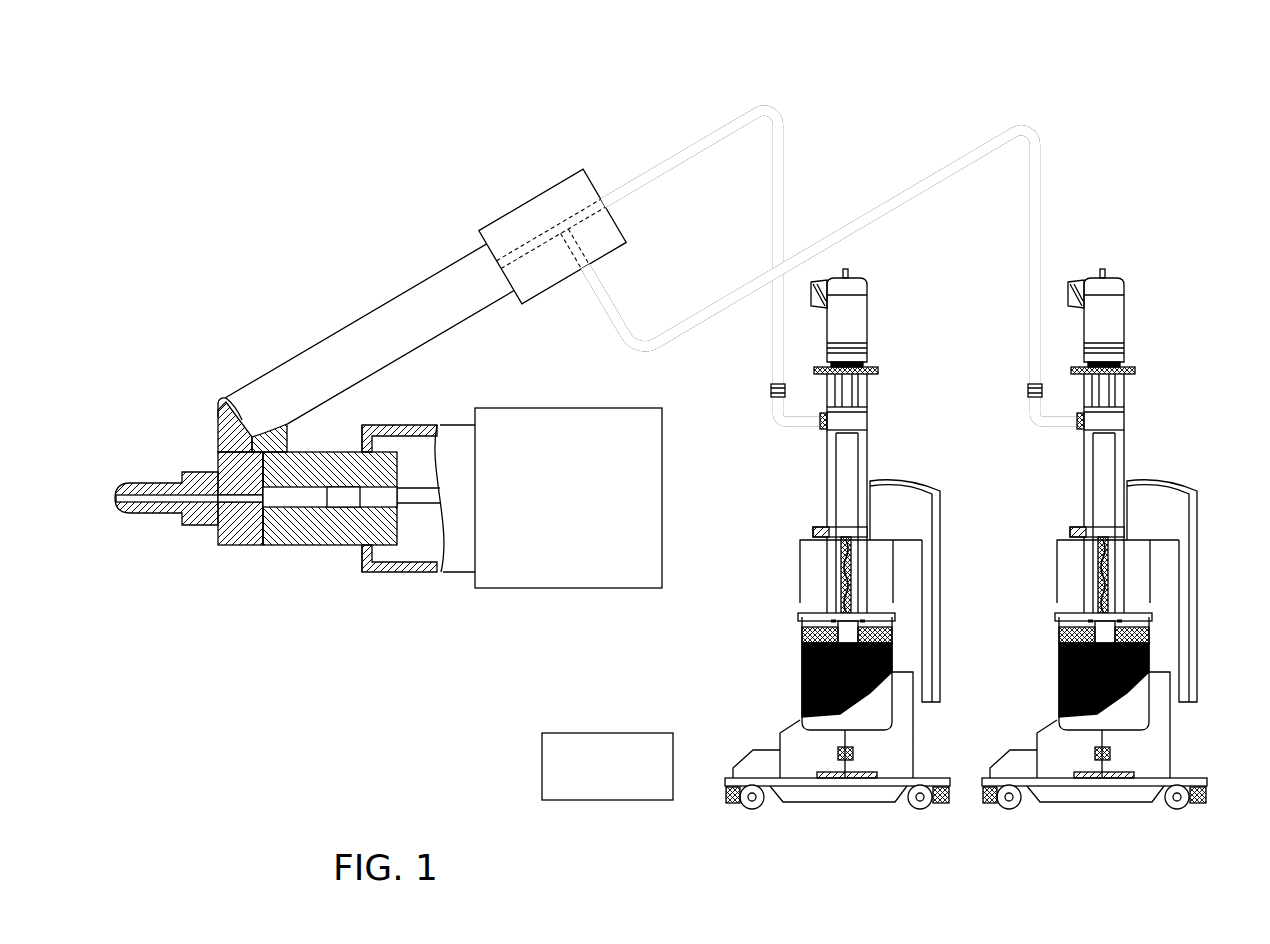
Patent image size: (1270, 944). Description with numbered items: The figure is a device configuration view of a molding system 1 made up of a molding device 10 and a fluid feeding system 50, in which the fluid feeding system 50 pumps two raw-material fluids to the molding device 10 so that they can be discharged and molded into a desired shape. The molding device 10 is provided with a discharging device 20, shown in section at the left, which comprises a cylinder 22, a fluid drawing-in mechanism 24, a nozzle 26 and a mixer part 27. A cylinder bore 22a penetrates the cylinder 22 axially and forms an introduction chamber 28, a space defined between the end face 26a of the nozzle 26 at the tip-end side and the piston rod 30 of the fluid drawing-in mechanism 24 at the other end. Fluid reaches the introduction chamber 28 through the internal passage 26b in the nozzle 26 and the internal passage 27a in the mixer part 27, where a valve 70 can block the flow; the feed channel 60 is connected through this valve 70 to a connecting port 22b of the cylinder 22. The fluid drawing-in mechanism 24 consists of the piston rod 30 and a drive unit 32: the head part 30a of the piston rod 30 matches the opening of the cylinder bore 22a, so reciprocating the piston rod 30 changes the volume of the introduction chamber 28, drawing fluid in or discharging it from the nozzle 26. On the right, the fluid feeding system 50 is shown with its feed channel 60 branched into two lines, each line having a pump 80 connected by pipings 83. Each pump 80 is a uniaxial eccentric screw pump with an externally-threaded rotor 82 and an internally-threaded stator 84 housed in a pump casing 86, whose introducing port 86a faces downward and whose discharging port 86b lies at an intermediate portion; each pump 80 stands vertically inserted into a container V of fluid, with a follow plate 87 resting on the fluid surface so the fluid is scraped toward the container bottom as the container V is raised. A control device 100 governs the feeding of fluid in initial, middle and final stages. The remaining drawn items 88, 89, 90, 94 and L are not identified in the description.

The molding system 1 is at (337, 293).
The molding device 10 is at (311, 563).
The discharging device 20 is at (218, 533).
The cylinder 22 is at (337, 547).
The cylinder bore 22a is at (287, 500).
The connecting port 22b is at (276, 445).
The fluid drawing-in mechanism 24 is at (440, 425).
The nozzle 26 is at (142, 483).
The end face 26a is at (272, 507).
The internal passage 26b is at (243, 474).
The mixer part 27 is at (424, 282).
The internal passage 27a is at (222, 400).
The introduction chamber 28 is at (316, 490).
The piston rod 30 is at (420, 502).
The head part 30a is at (338, 488).
The drive unit 32 is at (590, 420).
The fluid feeding system 50 is at (1137, 132).
The feed channel 60 is at (622, 172).
The valve 70 is at (222, 436).
The pump 80 is at (842, 470).
The rotor 82 is at (838, 578).
The pipings 83 is at (782, 108).
The stator 84 is at (838, 592).
The pump casing 86 is at (826, 490).
The introducing port 86a is at (802, 630).
The discharging port 86b is at (822, 428).
The follow plate 87 is at (893, 620).
The motor 88 is at (866, 318).
The frame 89 is at (858, 560).
The control panel 90 is at (1038, 576).
The display 94 is at (880, 540).
The control device 100 is at (607, 766).
The container V is at (801, 665).
The liquid L is at (801, 700).